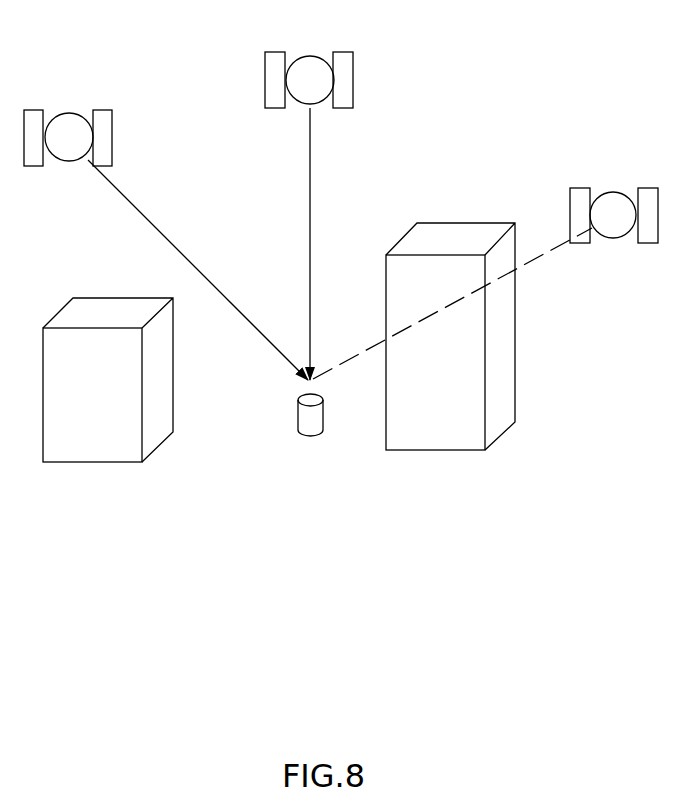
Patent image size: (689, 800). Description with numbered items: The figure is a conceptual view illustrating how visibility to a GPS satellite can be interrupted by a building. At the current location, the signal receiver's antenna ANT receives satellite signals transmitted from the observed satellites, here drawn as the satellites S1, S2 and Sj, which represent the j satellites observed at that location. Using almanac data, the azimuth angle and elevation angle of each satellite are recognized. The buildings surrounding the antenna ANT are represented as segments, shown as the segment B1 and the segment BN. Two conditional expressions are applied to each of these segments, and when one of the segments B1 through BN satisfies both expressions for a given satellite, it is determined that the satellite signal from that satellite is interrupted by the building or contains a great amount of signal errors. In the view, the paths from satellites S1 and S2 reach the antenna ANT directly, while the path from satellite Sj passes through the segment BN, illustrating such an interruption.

The satellite S1 is at (68, 122).
The satellite S2 is at (309, 64).
The satellite Sj is at (614, 200).
The segment B1 is at (108, 380).
The segment BN is at (450, 336).
The antenna ANT is at (312, 429).